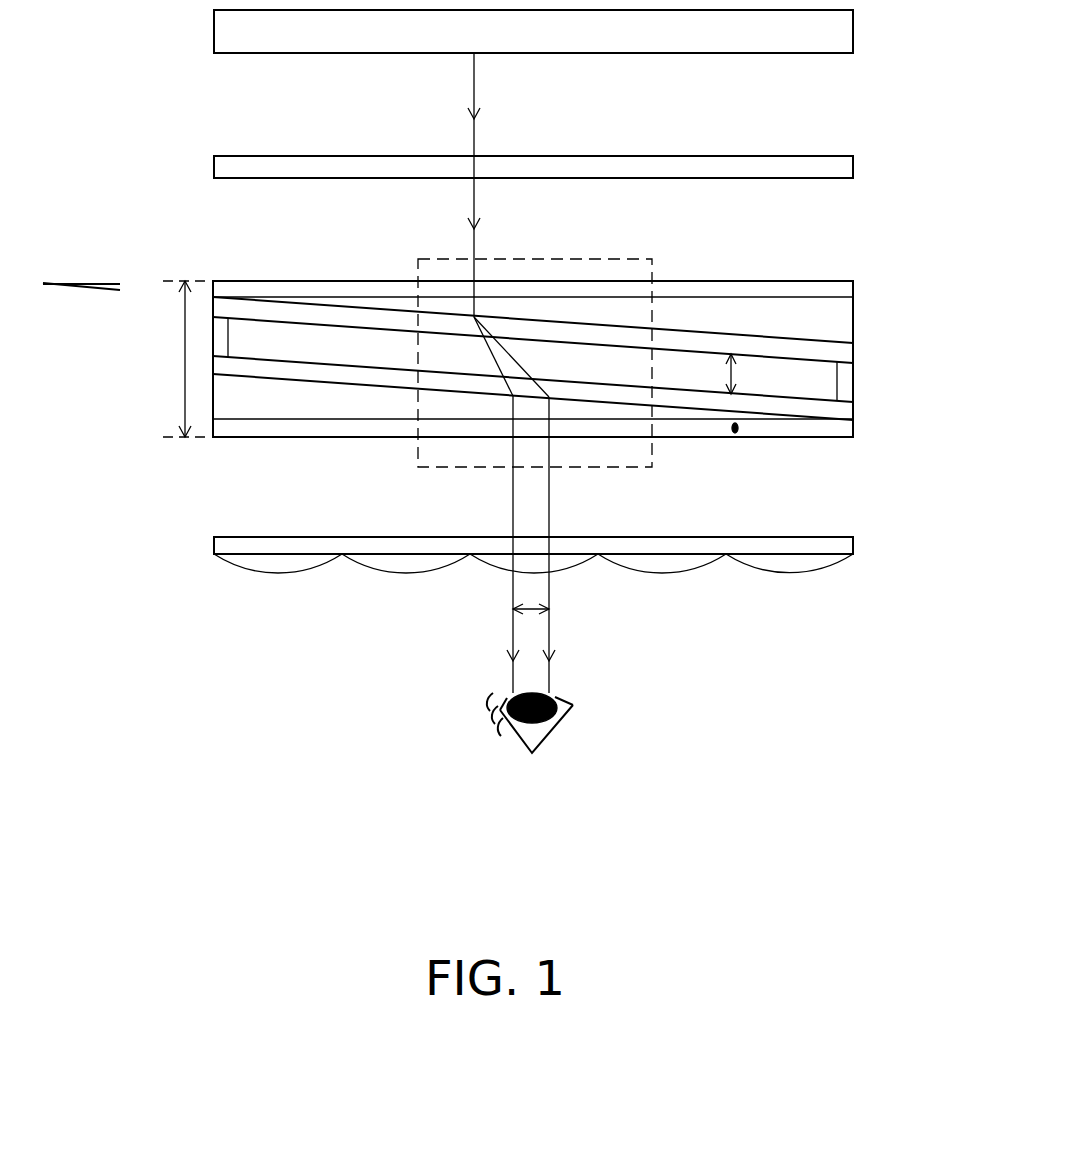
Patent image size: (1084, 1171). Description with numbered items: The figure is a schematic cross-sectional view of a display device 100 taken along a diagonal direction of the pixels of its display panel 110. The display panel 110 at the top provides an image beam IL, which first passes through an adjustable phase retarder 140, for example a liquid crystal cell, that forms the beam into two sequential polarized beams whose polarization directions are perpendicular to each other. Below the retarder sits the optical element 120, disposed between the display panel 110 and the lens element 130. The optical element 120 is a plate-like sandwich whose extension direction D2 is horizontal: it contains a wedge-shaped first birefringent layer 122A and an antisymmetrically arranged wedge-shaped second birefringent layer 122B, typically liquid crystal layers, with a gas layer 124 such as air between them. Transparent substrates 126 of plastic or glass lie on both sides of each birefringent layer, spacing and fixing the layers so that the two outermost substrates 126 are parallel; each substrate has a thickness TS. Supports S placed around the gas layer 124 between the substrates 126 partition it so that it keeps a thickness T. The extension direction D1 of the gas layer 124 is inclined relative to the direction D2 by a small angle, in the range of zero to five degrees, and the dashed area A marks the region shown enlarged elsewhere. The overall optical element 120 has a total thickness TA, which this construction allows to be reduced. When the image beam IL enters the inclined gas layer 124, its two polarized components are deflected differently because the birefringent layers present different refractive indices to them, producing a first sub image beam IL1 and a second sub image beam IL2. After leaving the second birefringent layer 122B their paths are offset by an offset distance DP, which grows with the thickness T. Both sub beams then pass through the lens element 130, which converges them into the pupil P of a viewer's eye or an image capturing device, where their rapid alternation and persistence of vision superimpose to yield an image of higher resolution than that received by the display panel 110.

The display device 100 is at (795, 757).
The display panel 110 is at (842, 33).
The optical element 120 is at (868, 287).
The first birefringent layer 122A is at (837, 317).
The second birefringent layer 122B is at (257, 402).
The gas layer 124 is at (293, 327).
The substrates 126 is at (733, 345).
The lens element 130 is at (838, 546).
The adjustable phase retarder 140 is at (838, 168).
The supports S is at (225, 334).
The thickness of the gas layer T is at (742, 374).
The total thickness of the optical element TA is at (183, 380).
The thickness of the substrate TS is at (738, 427).
The area A is at (623, 258).
The extension direction of the gas layer D1 is at (93, 290).
The extension direction of the optical element D2 is at (93, 283).
The image beam IL is at (475, 84).
The first sub image beam IL1 is at (512, 637).
The second sub image beam IL2 is at (551, 630).
The offset distance DP is at (548, 605).
The pupil P is at (553, 697).